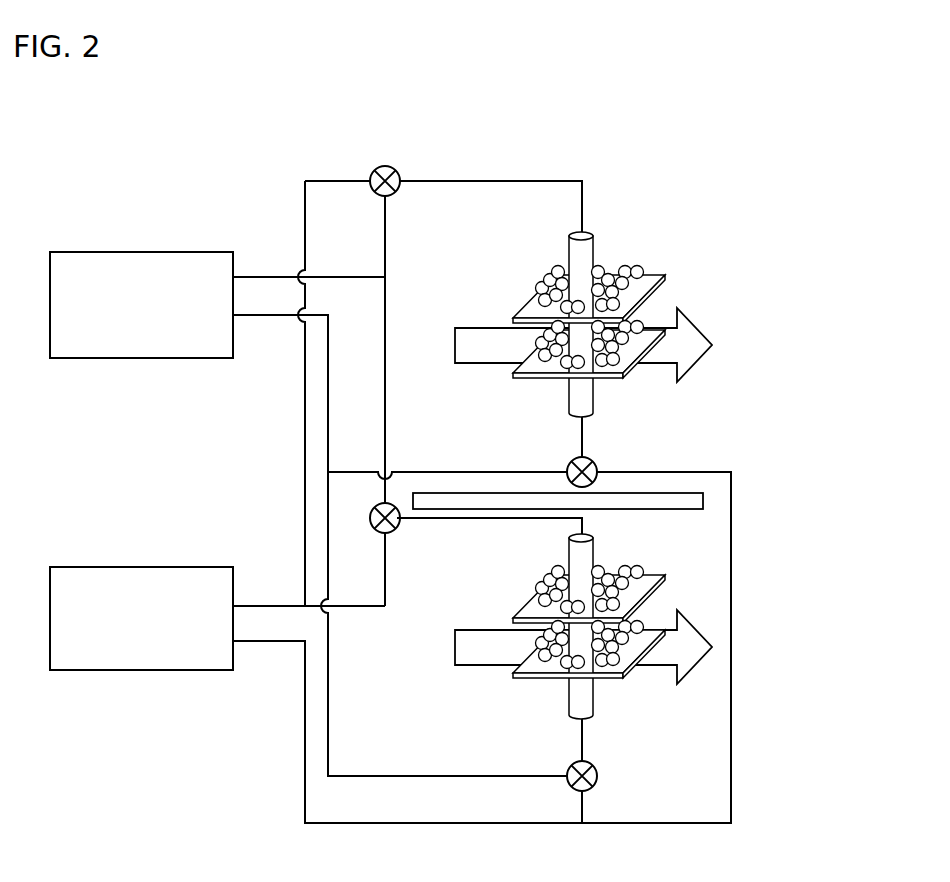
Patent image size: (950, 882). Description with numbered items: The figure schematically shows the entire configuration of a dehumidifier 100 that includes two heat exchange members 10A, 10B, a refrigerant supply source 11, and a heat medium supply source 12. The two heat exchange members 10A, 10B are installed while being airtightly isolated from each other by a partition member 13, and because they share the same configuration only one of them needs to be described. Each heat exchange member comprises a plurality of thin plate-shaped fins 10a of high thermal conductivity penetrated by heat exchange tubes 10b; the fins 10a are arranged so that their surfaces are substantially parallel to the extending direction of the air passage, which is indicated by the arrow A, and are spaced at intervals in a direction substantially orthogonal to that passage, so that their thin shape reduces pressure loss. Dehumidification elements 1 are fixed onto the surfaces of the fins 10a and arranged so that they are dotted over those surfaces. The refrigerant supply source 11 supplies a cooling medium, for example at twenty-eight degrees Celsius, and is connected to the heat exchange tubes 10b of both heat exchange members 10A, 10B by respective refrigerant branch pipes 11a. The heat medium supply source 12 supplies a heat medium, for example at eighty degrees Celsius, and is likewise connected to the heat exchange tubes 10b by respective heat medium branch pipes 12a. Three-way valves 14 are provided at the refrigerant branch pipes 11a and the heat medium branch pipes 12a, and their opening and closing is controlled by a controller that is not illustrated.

The dehumidifier 100 is at (619, 177).
The heat exchange member 10A is at (680, 254).
The heat exchange member 10B is at (692, 577).
The fin 10a is at (588, 468).
The heat exchange tube 10b is at (569, 242).
The dehumidification element 1 is at (540, 283).
The refrigerant supply source 11 is at (138, 252).
The refrigerant branch pipe 11a is at (281, 277).
The heat medium supply source 12 is at (96, 567).
The heat medium branch pipe 12a is at (279, 606).
The partition member 13 is at (640, 493).
The three-way valve 14 is at (392, 169).
The arrow A is at (473, 328).